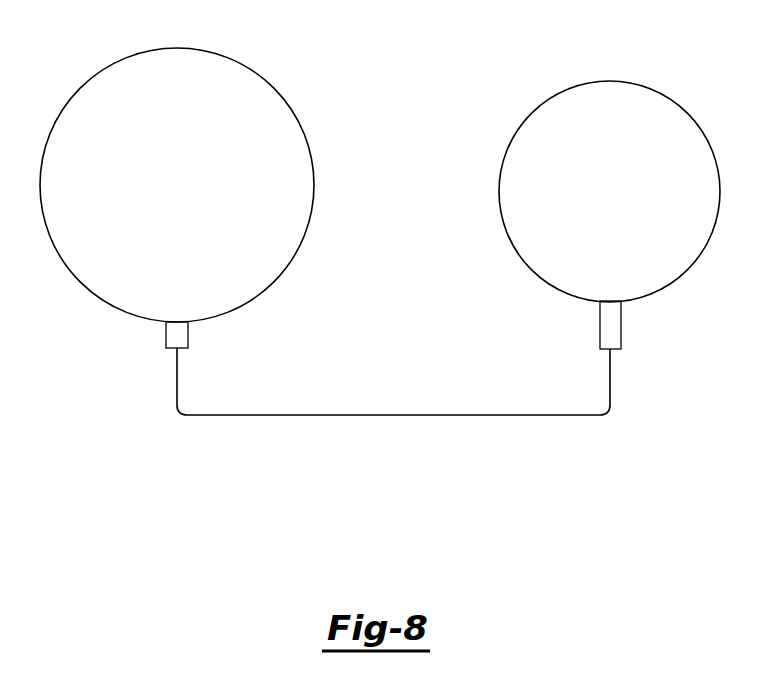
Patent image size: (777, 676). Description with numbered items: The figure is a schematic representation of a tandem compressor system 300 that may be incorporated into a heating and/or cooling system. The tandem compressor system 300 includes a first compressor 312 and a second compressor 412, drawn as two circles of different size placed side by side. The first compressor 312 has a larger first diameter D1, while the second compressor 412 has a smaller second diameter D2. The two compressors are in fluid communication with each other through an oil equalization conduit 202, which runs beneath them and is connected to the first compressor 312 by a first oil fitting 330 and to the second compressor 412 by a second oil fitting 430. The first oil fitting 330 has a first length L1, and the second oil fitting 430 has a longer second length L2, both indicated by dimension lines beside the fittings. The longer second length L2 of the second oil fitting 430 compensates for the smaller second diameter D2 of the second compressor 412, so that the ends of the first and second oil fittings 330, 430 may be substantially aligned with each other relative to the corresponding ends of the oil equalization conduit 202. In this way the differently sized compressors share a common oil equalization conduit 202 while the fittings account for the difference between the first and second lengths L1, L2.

The tandem compressor system 300 is at (401, 71).
The first compressor 312 is at (92, 66).
The second compressor 412 is at (680, 90).
The first oil fitting 330 is at (188, 334).
The second oil fitting 430 is at (600, 318).
The oil equalization conduit 202 is at (408, 414).
The first diameter D1 is at (283, 79).
The second diameter D2 is at (517, 112).
The first length L1 is at (20, 322).
The second length L2 is at (652, 301).